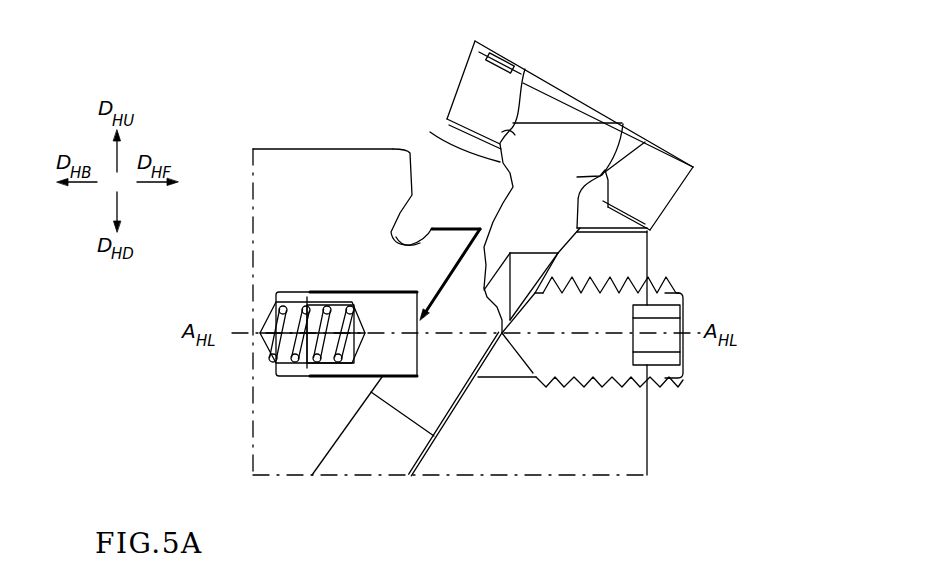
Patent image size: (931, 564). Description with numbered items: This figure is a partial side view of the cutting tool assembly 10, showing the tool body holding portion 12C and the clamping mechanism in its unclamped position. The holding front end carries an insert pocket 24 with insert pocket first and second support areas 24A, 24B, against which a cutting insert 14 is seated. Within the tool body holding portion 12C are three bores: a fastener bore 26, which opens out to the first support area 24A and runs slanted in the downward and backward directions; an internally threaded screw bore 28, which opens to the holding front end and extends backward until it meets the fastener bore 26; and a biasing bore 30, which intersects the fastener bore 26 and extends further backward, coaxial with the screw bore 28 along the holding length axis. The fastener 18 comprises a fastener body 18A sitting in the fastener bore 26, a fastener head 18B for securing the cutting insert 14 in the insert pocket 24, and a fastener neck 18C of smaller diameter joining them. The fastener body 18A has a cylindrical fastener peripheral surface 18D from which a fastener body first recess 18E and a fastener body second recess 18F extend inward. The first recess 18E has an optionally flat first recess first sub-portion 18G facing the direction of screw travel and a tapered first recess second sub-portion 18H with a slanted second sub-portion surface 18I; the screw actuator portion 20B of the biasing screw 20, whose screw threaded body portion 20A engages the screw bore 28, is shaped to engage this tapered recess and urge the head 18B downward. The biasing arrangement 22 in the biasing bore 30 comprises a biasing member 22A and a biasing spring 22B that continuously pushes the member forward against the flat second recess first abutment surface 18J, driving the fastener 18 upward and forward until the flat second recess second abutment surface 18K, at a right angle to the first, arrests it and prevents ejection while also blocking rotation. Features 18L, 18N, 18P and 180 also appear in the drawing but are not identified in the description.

The cutting tool assembly 10 is at (690, 48).
The tool body holding portion 12C is at (641, 267).
The cutting insert 14 is at (682, 176).
The fastener 18 is at (654, 124).
The fastener body 18A is at (390, 430).
The fastener head 18B is at (585, 144).
The fastener neck 18C is at (542, 178).
The fastener peripheral surface 18D is at (455, 407).
The fastener body first recess 18E is at (525, 240).
The fastener body second recess 18F is at (432, 293).
The first recess first sub-portion 18G is at (485, 323).
The first recess second sub-portion 18H is at (484, 310).
The second sub-portion surface 18I is at (483, 288).
The second recess first abutment surface 18J is at (437, 332).
The second recess second abutment surface 18K is at (386, 390).
The head flange 18L is at (620, 183).
The head ridge 18N is at (518, 145).
The head cap block 18P is at (500, 143).
The head top plate 180 is at (429, 146).
The biasing screw 20 is at (665, 300).
The screw threaded body portion 20A is at (602, 409).
The screw actuator portion 20B is at (506, 382).
The biasing arrangement 22 is at (276, 402).
The biasing member 22A is at (352, 300).
The biasing spring 22B is at (306, 320).
The insert pocket 24 is at (425, 175).
The insert pocket first support area 24A is at (479, 217).
The insert pocket second support area 24B is at (438, 177).
The fastener bore 26 is at (418, 444).
The screw bore 28 is at (498, 378).
The biasing bore 30 is at (290, 377).